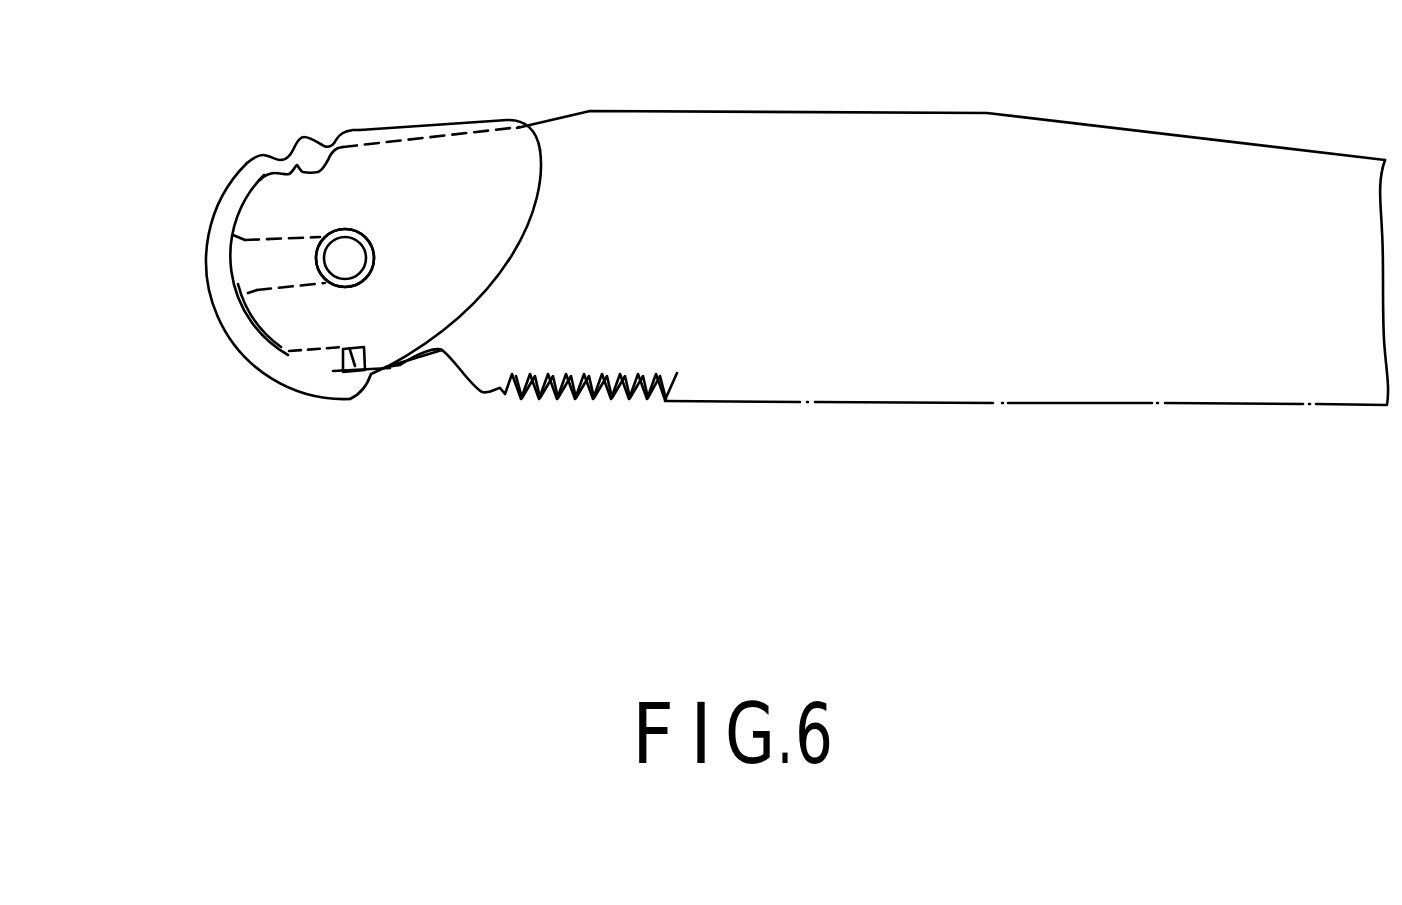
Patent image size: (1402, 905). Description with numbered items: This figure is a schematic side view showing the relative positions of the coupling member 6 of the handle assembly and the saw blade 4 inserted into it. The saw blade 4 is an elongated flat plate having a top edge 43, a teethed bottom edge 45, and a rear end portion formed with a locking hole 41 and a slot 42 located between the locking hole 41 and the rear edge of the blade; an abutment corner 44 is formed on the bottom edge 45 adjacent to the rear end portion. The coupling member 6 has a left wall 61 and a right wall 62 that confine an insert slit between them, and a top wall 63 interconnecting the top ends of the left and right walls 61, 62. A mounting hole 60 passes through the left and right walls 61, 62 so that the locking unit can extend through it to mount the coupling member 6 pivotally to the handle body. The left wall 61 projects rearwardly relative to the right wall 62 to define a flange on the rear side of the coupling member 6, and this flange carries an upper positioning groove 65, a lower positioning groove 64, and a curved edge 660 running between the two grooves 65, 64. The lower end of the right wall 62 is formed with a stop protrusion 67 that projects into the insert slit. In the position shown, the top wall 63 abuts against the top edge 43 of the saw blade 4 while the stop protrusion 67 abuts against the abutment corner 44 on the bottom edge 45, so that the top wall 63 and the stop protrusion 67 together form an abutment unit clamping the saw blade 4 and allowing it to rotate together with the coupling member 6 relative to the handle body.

The saw blade 4 is at (718, 145).
The coupling member 6 is at (237, 366).
The locking hole 41 is at (347, 229).
The slot 42 is at (233, 279).
The top edge 43 is at (447, 140).
The abutment corner 44 is at (390, 372).
The teethed bottom edge 45 is at (640, 400).
The mounting hole 60 is at (373, 253).
The left wall 61 is at (228, 313).
The right wall 62 is at (505, 235).
The top wall 63 is at (408, 127).
The lower positioning groove 64 is at (363, 378).
The upper positioning groove 65 is at (282, 158).
The stop protrusion 67 is at (334, 372).
The curved edge 660 is at (211, 262).